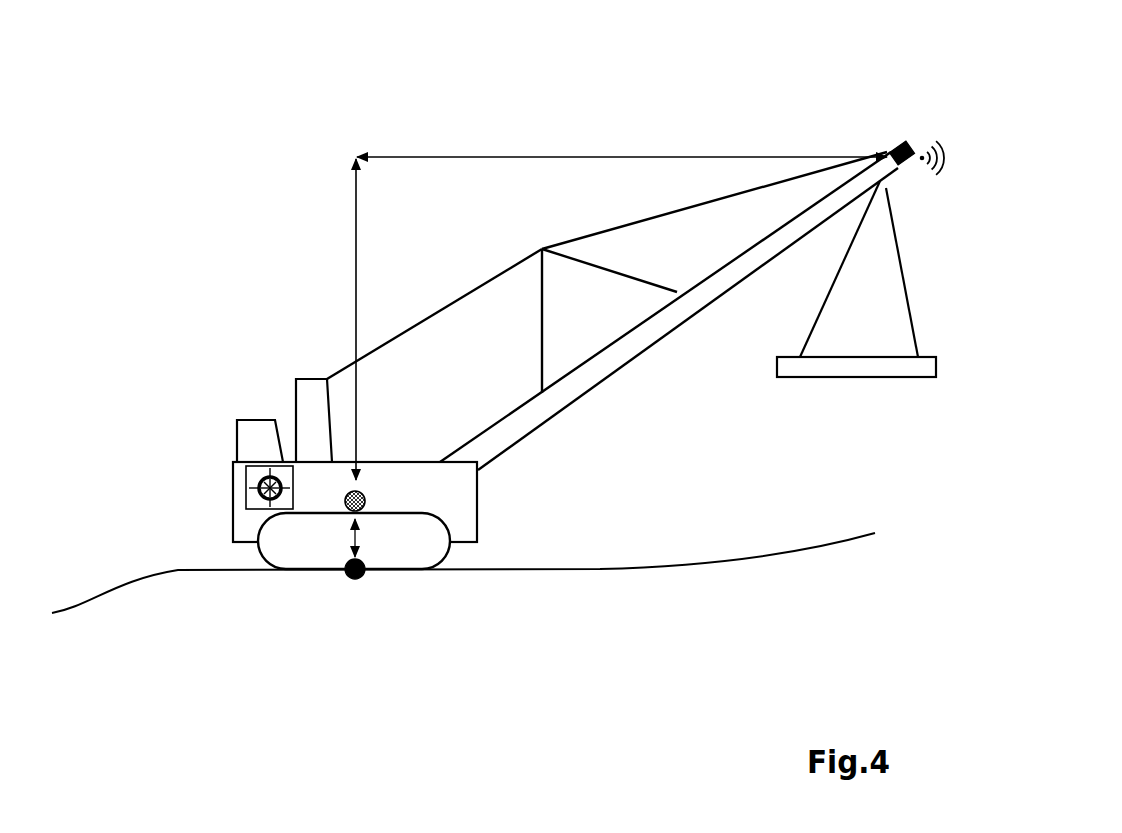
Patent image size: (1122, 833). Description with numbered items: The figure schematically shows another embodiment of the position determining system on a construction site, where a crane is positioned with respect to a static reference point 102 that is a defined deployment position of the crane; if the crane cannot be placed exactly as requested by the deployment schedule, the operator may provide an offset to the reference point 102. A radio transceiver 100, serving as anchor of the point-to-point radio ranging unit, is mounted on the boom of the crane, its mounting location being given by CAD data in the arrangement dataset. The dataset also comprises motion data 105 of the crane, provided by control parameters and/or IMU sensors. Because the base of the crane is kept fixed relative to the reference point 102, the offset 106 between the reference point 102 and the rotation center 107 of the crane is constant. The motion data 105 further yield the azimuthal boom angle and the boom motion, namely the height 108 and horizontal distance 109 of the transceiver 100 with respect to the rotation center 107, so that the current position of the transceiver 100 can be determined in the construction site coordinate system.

The radio transceiver 100 is at (835, 88).
The reference point 102 is at (288, 597).
The motion data 105 is at (190, 442).
The offset 106 is at (398, 581).
The rotation center 107 is at (229, 386).
The height 108 is at (280, 319).
The horizontal distance 109 is at (622, 92).